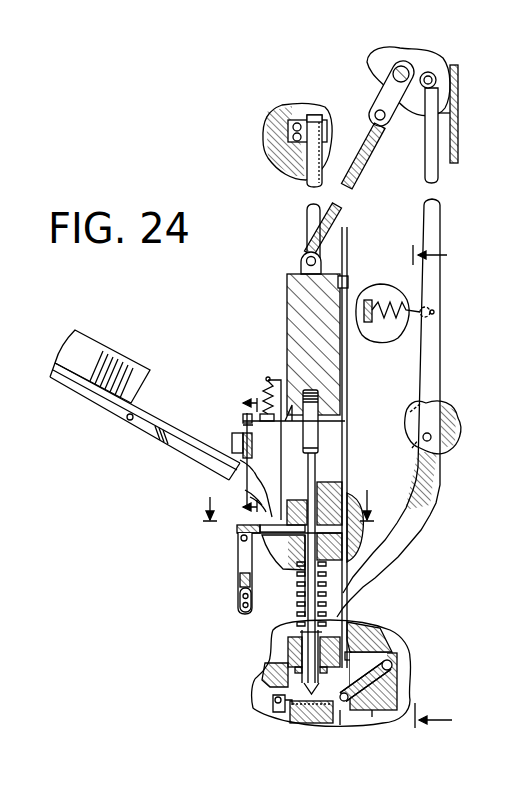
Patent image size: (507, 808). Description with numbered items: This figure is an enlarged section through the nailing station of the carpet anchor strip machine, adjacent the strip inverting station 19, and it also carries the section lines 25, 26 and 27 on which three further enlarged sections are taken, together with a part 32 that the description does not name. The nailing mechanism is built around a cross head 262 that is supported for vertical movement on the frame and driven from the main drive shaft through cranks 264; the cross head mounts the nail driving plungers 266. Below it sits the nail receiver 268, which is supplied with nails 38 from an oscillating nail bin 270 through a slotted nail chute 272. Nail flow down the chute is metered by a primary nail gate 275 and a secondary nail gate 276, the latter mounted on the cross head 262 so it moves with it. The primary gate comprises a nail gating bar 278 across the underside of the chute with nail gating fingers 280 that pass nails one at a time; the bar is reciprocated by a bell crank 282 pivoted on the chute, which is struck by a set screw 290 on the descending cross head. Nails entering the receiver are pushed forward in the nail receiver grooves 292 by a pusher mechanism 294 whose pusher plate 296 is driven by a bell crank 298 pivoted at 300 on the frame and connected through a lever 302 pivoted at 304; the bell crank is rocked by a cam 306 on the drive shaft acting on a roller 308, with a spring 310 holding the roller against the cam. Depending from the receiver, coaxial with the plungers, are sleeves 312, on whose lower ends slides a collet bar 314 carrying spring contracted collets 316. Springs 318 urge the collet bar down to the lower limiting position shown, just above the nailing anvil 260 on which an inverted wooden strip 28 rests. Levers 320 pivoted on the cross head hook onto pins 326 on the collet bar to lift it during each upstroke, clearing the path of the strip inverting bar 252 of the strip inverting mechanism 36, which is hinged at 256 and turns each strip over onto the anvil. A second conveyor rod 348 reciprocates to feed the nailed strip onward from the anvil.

The carpet strip inverting station 19 is at (406, 621).
The section line 25— 25 is at (445, 489).
The section line 26— 26 is at (235, 457).
The section line 27— 27 is at (286, 500).
The wooden strip 28 is at (415, 657).
The pin 32 is at (397, 680).
The strip inverting mechanism 36 is at (380, 707).
The nail 38 is at (307, 472).
The strip inverting bar 252 is at (398, 655).
The hinge 256 is at (347, 700).
The nailing anvil 260 is at (323, 720).
The cross head 262 is at (333, 376).
The cranks 264 is at (340, 213).
The nail driving plungers 266 is at (343, 445).
The nail receiver 268 is at (287, 547).
The nail bin 270 is at (103, 403).
The nail chute 272 is at (150, 464).
The primary nail gate 275 is at (229, 432).
The secondary nail gate 276 is at (310, 470).
The nail gating bar 278 is at (250, 497).
The nail gating fingers 280 is at (245, 490).
The bell crank 282 is at (238, 444).
The set screw 290 is at (265, 380).
The nail receiver grooves 292 is at (307, 537).
The pusher mechanism 294 is at (239, 542).
The pusher plate 296 is at (237, 535).
The bell crank 298 is at (437, 391).
The pivot 300 is at (433, 437).
The lever 302 is at (250, 585).
The pivot 304 is at (247, 595).
The cam 306 is at (413, 63).
The roller 308 is at (433, 75).
The spring 310 is at (430, 306).
The sleeves 312 is at (330, 596).
The collet bar 314 is at (290, 668).
The collets 316 is at (232, 735).
The springs 318 is at (333, 613).
The levers 320 is at (347, 410).
The pins 326 is at (380, 637).
The conveyor rod 348 is at (290, 717).